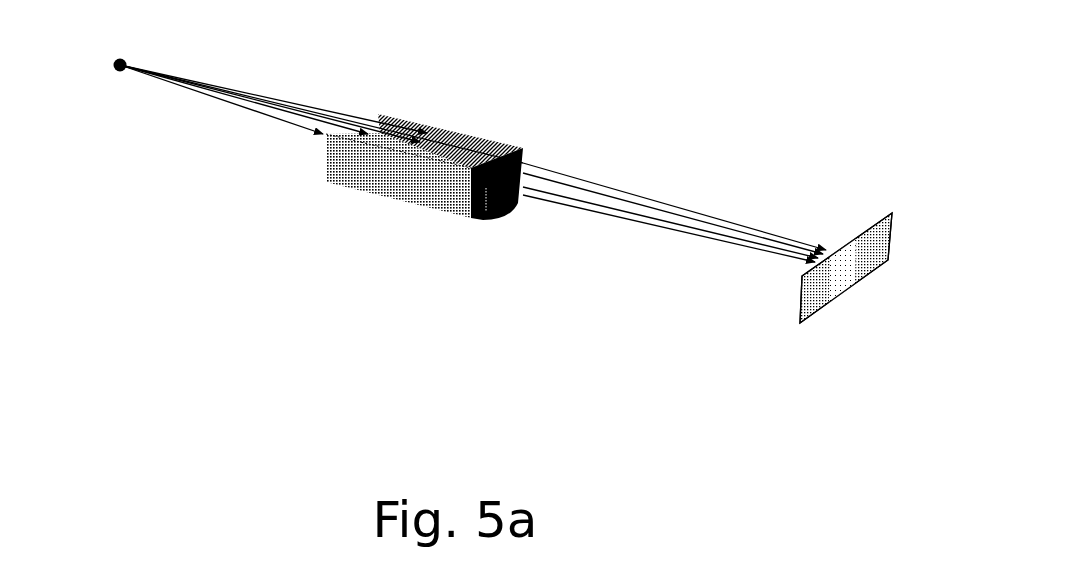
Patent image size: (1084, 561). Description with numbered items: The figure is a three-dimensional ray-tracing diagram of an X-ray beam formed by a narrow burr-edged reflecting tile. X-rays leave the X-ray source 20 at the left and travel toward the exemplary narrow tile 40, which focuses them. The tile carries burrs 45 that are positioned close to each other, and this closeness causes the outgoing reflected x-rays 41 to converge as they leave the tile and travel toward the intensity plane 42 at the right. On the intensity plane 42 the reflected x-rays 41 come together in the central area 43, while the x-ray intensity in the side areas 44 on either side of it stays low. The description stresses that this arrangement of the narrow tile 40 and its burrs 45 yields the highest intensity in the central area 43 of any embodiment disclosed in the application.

The X-ray source 20 is at (121, 58).
The narrow tile 40 is at (508, 208).
The outgoing reflected x-rays 41 is at (687, 232).
The intensity plane 42 is at (892, 240).
The central area 43 is at (848, 272).
The side areas 44 is at (817, 305).
The burrs 45 is at (363, 180).